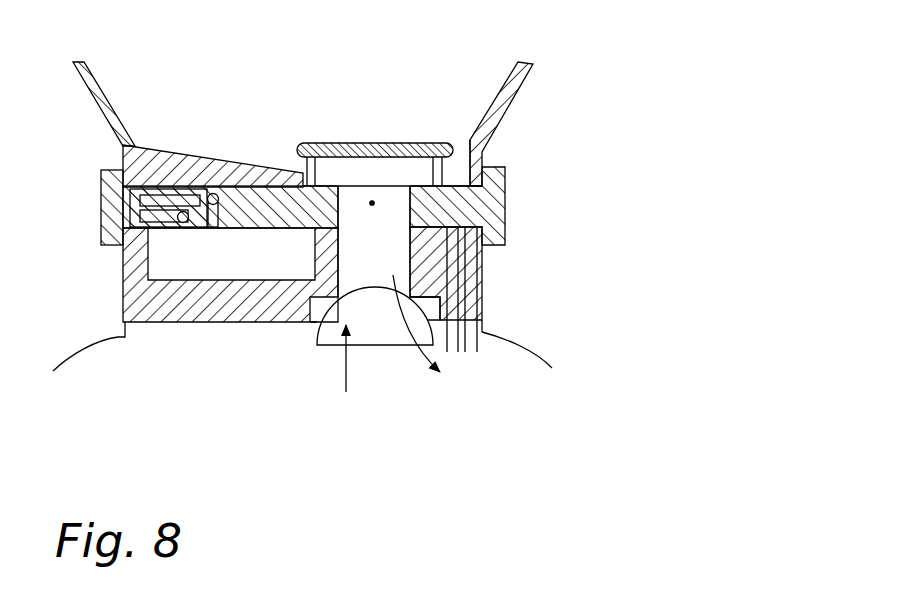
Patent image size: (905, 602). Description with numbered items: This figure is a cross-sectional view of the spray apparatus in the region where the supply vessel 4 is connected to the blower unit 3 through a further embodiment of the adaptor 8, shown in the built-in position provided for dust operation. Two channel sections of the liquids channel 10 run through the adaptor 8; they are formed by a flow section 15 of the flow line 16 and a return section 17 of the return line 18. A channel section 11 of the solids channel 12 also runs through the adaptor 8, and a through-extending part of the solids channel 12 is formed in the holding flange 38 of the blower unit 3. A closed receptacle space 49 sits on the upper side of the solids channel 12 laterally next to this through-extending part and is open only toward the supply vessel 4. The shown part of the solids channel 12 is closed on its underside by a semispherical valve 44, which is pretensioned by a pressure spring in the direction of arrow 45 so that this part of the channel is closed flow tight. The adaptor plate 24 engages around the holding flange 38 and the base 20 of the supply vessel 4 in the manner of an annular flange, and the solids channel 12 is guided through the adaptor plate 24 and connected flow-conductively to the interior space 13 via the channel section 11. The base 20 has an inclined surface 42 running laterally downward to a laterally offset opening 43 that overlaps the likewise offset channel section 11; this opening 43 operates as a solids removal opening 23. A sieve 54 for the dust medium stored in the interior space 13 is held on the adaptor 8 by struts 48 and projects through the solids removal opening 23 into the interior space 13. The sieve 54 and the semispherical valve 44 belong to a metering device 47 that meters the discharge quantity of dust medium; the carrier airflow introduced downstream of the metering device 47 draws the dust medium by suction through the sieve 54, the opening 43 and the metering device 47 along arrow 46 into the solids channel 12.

The blower unit 3 is at (538, 358).
The supply vessel 4 is at (525, 79).
The adaptor 8 is at (506, 179).
The liquids channel 10 is at (464, 362).
The channel section 11 is at (372, 203).
The solids channel 12 is at (364, 264).
The interior space 13 is at (291, 49).
The flow section 15 is at (130, 213).
The flow line 16 is at (465, 350).
The return section 17 is at (147, 193).
The return line 18 is at (475, 340).
The base 20 is at (210, 153).
The solids removal opening 23 is at (382, 172).
The adaptor plate 24 is at (497, 211).
The holding flange 38 is at (483, 292).
The inclined surface 42 is at (186, 168).
The opening 43 is at (455, 183).
The semispherical valve 44 is at (372, 325).
The arrow 45 is at (343, 367).
The arrow 46 is at (428, 360).
The metering device 47 is at (320, 287).
The struts 48 is at (318, 170).
The receptacle space 49 is at (279, 267).
The sieve 54 is at (343, 143).